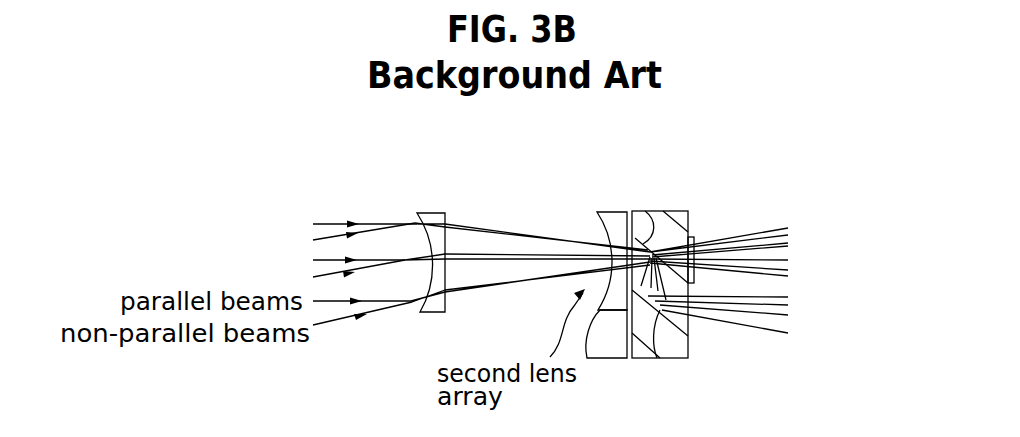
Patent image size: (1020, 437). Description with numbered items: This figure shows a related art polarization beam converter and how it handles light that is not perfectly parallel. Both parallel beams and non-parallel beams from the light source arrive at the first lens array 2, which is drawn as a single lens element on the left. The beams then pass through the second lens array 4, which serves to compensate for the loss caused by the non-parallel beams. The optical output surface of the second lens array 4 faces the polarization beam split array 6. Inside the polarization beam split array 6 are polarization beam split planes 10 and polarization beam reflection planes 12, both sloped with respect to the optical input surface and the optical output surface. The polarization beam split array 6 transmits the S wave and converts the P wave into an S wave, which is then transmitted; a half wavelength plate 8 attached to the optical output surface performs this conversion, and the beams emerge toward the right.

The first lens array 2 is at (430, 218).
The second lens array 4 is at (612, 222).
The polarization beam split array 6 is at (687, 208).
The half wavelength plate 8 is at (694, 231).
The polarization beam split plane 10 is at (647, 212).
The polarization beam reflection plane 12 is at (660, 358).